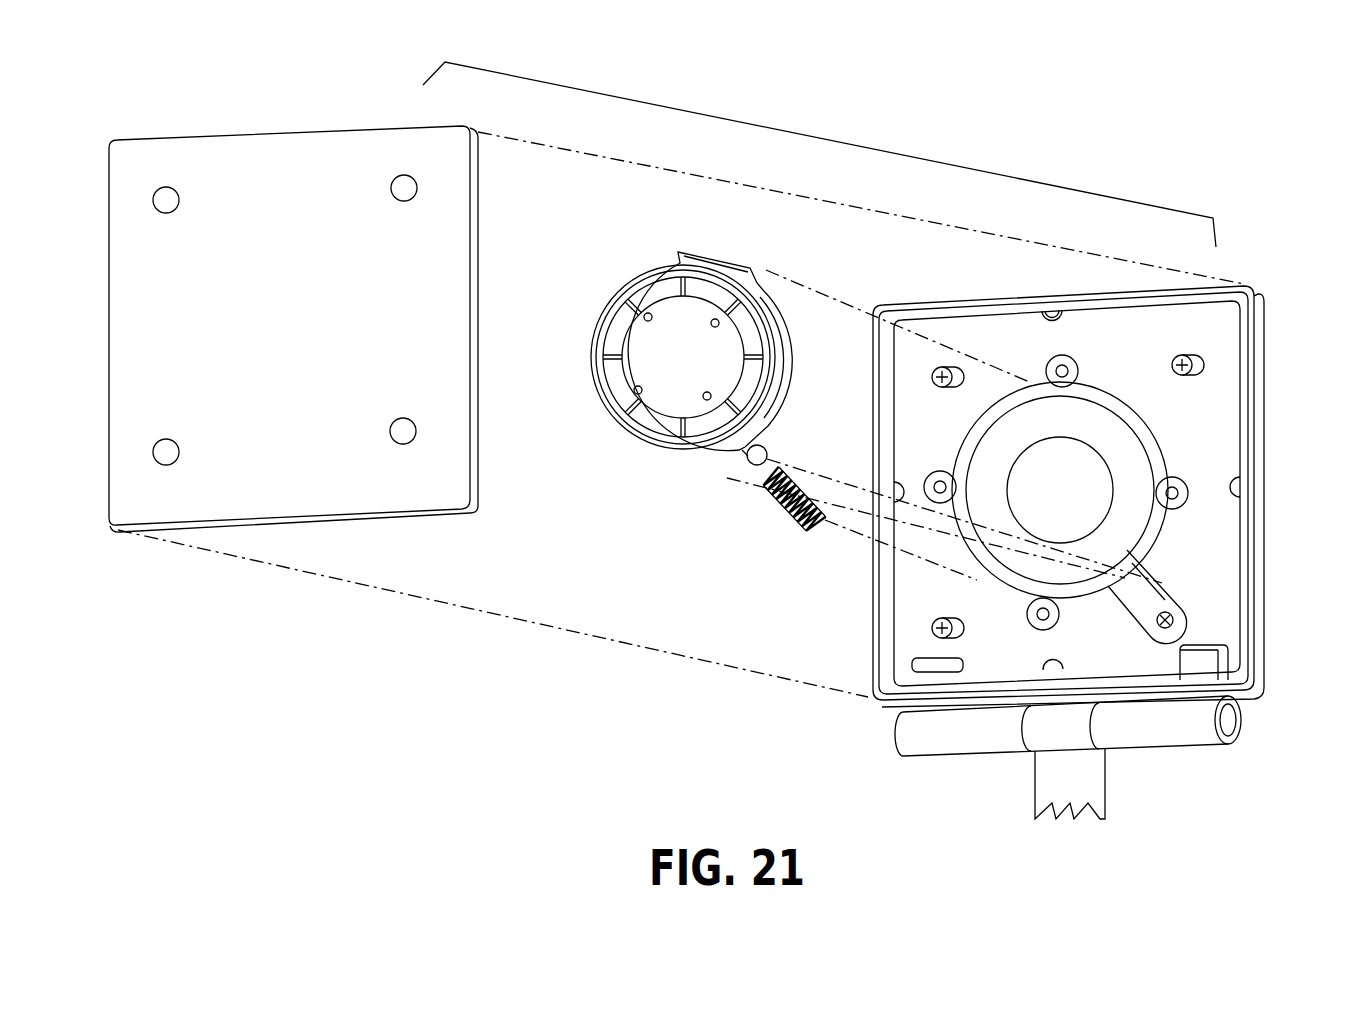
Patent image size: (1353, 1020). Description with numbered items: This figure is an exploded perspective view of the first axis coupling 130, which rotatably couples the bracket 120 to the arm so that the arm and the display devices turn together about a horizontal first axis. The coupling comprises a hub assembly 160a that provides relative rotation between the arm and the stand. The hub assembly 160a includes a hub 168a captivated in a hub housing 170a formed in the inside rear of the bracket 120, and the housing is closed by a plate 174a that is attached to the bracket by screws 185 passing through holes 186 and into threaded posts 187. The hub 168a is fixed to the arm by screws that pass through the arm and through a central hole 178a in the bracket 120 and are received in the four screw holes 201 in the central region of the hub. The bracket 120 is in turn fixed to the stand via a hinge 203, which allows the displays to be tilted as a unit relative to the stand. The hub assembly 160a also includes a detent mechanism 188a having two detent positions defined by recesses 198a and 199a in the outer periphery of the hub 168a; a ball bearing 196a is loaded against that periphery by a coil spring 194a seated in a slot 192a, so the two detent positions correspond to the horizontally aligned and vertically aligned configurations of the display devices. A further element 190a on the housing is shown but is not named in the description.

The bracket 120 is at (1258, 452).
The first axis coupling 130 is at (935, 150).
The hub assembly 160a is at (1051, 556).
The hub 168a is at (677, 367).
The hub housing 170a is at (1066, 497).
The plate 174a is at (254, 334).
The central hole 178a is at (1028, 503).
The screws 185 is at (932, 369).
The holes 186 is at (167, 203).
The threaded posts 187 is at (966, 378).
The detent mechanism 188a is at (728, 524).
The annular boss 190a is at (1005, 440).
The slot 192a is at (1146, 588).
The coil spring 194a is at (793, 525).
The ball bearing 196a is at (767, 456).
The recess 198a is at (742, 450).
The recess 199a is at (764, 279).
The screw holes 201 is at (641, 391).
The hinge 203 is at (975, 763).